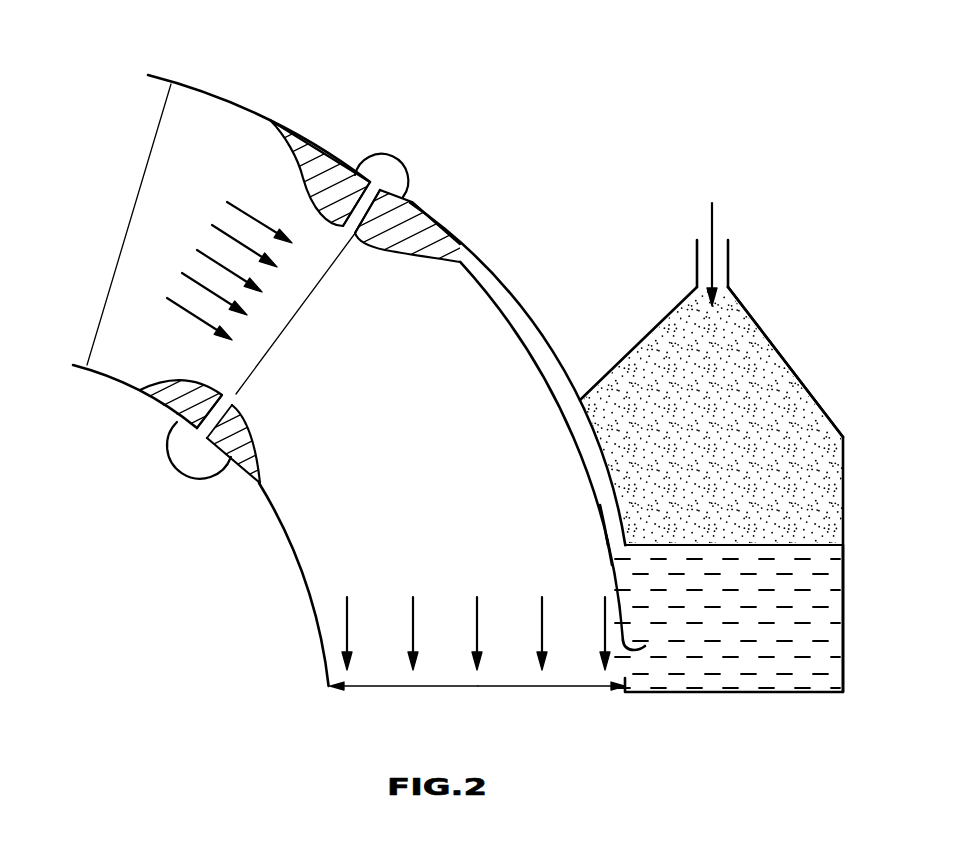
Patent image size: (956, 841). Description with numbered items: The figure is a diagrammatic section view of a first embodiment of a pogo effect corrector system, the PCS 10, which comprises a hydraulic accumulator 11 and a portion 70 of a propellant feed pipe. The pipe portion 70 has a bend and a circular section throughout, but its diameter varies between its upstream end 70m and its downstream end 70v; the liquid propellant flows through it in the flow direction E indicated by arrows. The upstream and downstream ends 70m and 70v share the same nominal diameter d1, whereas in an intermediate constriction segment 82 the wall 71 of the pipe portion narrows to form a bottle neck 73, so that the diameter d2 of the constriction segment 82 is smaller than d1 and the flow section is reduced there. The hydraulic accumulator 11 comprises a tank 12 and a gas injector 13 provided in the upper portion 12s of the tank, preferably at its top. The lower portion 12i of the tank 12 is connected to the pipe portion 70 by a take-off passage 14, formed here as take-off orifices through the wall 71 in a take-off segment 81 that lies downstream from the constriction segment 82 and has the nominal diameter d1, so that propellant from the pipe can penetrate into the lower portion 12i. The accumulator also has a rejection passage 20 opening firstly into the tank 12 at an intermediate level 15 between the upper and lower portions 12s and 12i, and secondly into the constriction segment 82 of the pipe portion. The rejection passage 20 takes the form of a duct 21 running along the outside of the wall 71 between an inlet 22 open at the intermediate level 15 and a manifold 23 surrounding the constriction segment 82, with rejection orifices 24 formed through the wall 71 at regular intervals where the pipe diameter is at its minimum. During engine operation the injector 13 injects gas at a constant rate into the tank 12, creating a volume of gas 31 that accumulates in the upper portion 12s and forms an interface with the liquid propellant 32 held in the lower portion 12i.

The pogo effect corrector system 10 is at (596, 144).
The hydraulic accumulator 11 is at (775, 346).
The tank 12 is at (843, 491).
The upper portion of the tank 12s is at (698, 423).
The lower portion of the tank 12i is at (751, 668).
The gas injector 13 is at (728, 258).
The take-off passage 14 is at (637, 643).
The intermediate level 15 is at (762, 547).
The rejection passage 20 is at (556, 354).
The duct 21 is at (524, 334).
The inlet 22 is at (631, 547).
The manifold 23 is at (401, 158).
The rejection orifices 24 is at (346, 228).
The volume of gas 31 is at (802, 404).
The liquid propellant 32 is at (808, 639).
The feed pipe portion 70 is at (196, 76).
The upstream end 70m is at (78, 366).
The downstream end 70v is at (330, 688).
The wall 71 is at (606, 566).
The bottle neck 73 is at (200, 389).
The take-off segment 81 is at (495, 664).
The constriction segment 82 is at (271, 311).
The nominal diameter d1 is at (478, 708).
The constriction diameter d2 is at (302, 318).
The flow direction E is at (255, 218).